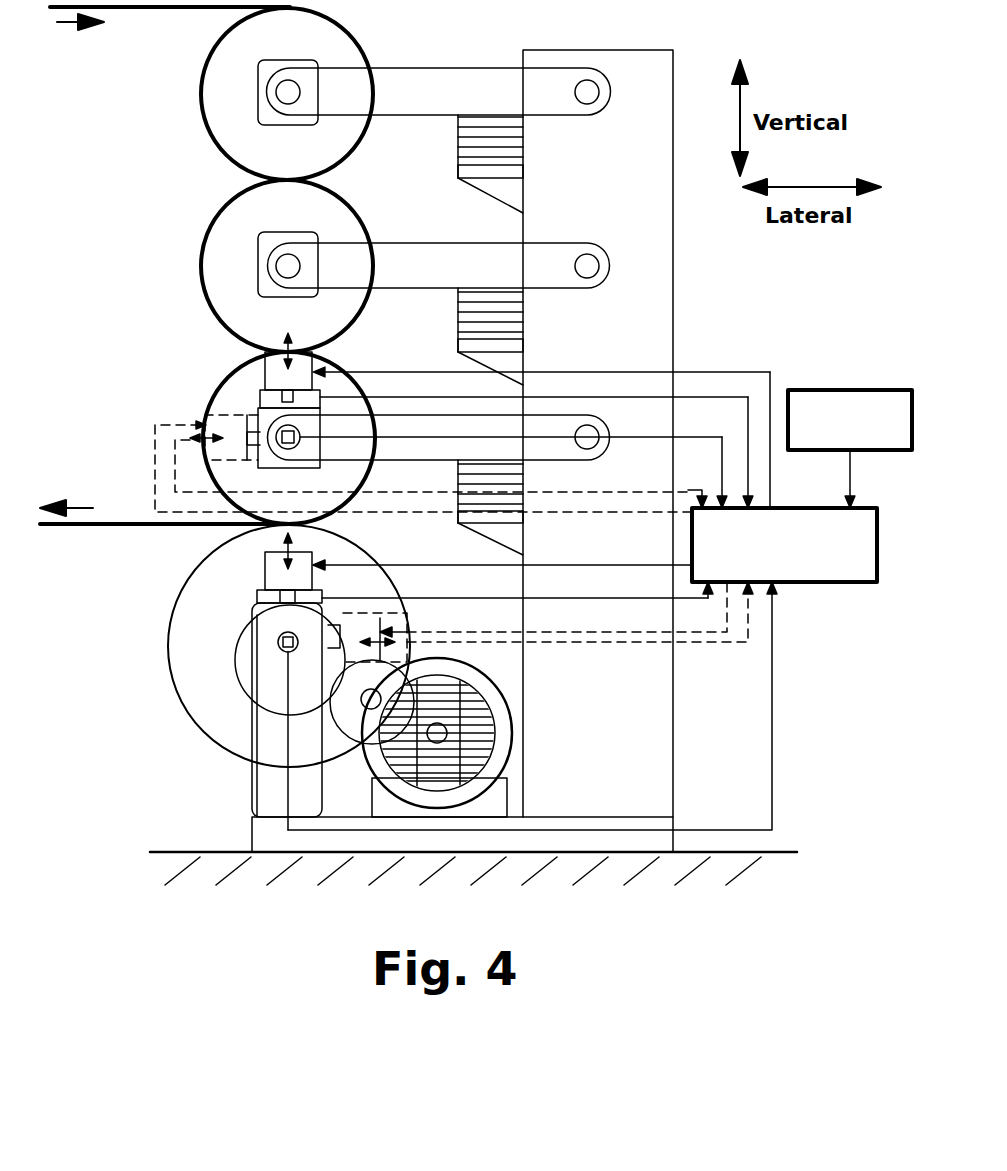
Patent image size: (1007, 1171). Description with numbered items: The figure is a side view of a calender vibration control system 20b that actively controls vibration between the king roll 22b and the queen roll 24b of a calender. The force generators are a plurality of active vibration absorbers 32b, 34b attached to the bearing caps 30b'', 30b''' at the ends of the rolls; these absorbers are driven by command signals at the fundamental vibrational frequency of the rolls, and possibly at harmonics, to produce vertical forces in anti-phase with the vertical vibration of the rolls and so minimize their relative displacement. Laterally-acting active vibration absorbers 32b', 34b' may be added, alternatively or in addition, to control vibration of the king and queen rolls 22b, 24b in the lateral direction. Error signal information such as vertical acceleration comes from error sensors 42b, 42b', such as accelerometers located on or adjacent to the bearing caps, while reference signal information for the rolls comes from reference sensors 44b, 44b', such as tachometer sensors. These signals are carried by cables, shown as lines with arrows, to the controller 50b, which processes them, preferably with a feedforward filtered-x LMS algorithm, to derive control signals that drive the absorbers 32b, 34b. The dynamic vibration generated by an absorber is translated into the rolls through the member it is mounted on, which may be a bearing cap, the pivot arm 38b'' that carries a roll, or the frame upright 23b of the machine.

The calender vibration control system 20b is at (772, 348).
The king roll 22b is at (242, 646).
The frame upright 23b is at (466, 850).
The queen roll 24b is at (398, 466).
The bearing cap 30b'' is at (245, 433).
The bearing cap 30b''' is at (202, 660).
The active vibration absorber 32b is at (421, 568).
The laterally-acting active vibration absorber 32b' is at (540, 622).
The active vibration absorber 34b is at (251, 185).
The laterally-acting active vibration absorber 34b' is at (175, 423).
The pivot arm 38b'' is at (445, 307).
The error sensor 42b is at (210, 697).
The error sensor 42b' is at (447, 408).
The reference sensor 44b is at (473, 706).
The reference sensor 44b' is at (504, 469).
The controller 50b is at (813, 582).